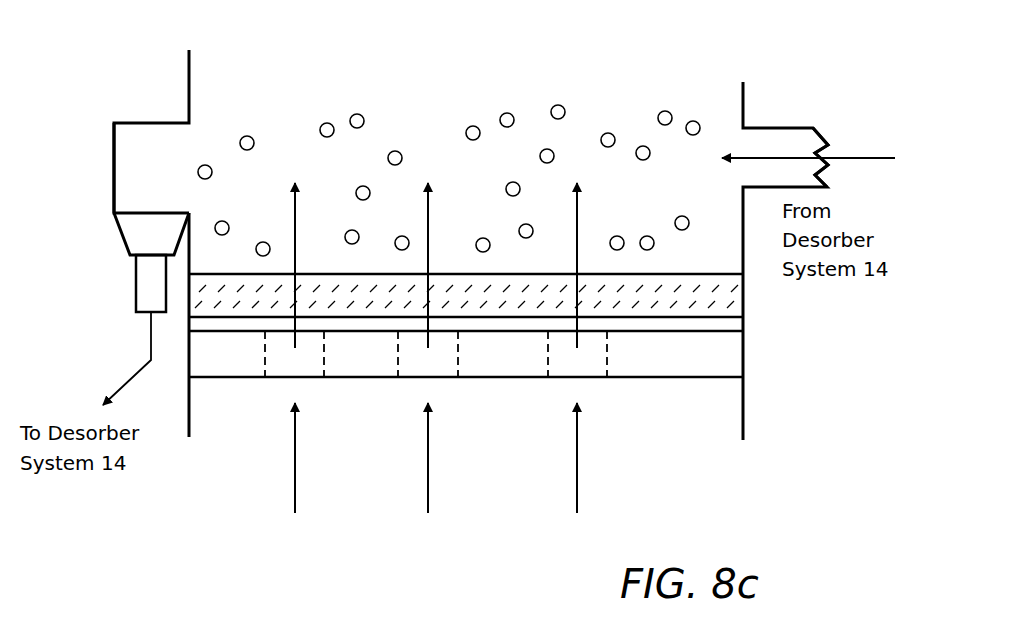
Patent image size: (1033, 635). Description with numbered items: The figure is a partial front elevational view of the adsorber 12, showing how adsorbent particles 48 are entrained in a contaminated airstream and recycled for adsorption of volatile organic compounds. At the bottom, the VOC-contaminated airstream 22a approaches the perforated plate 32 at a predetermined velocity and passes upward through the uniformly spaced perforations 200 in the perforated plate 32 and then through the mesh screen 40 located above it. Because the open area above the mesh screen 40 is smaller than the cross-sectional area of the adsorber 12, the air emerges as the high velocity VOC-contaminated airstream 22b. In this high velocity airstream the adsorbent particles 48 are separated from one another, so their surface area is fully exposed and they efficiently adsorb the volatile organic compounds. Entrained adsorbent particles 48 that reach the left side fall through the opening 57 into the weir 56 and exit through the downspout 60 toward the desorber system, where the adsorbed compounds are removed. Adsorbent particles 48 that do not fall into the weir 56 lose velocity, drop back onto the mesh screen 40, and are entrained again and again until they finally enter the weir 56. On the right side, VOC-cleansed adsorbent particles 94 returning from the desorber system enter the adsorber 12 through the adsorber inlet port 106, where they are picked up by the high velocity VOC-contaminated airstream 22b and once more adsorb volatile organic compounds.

The adsorber 12 is at (150, 30).
The opening 57 is at (181, 168).
The weir 56 is at (124, 181).
The downspout 60 is at (152, 283).
The adsorbent particles 48 is at (328, 123).
The high velocity VOC-contaminated airstream 22b is at (295, 208).
The VOC-contaminated airstream 22a is at (296, 490).
The mesh screen 40 is at (661, 295).
The perforated plate 32 is at (684, 360).
The perforations 200 is at (305, 366).
The adsorber inlet port 106 is at (755, 139).
The VOC-cleansed adsorbent particles 94 is at (832, 157).